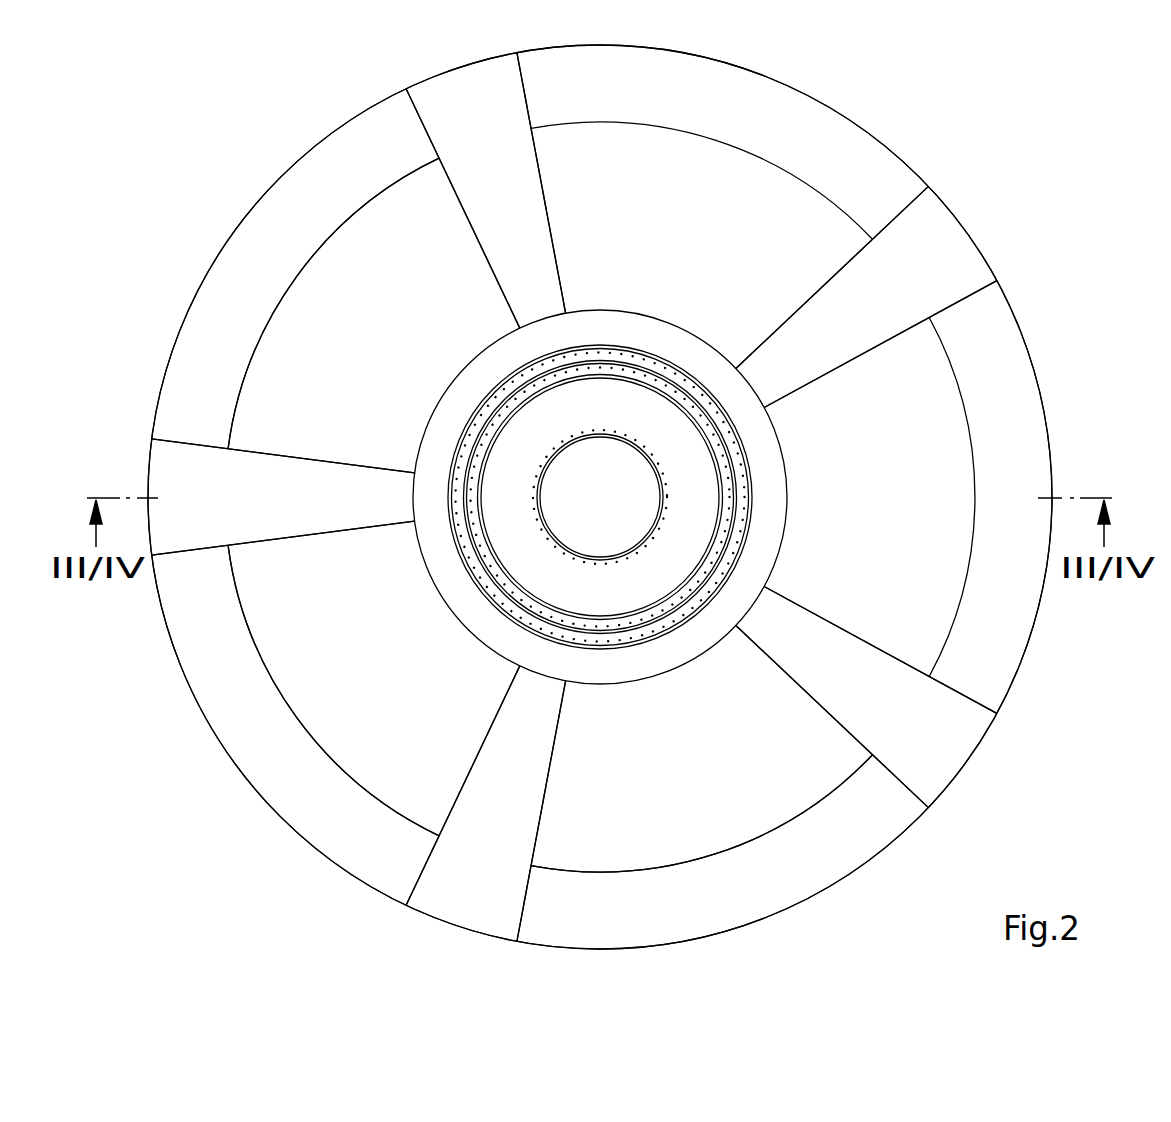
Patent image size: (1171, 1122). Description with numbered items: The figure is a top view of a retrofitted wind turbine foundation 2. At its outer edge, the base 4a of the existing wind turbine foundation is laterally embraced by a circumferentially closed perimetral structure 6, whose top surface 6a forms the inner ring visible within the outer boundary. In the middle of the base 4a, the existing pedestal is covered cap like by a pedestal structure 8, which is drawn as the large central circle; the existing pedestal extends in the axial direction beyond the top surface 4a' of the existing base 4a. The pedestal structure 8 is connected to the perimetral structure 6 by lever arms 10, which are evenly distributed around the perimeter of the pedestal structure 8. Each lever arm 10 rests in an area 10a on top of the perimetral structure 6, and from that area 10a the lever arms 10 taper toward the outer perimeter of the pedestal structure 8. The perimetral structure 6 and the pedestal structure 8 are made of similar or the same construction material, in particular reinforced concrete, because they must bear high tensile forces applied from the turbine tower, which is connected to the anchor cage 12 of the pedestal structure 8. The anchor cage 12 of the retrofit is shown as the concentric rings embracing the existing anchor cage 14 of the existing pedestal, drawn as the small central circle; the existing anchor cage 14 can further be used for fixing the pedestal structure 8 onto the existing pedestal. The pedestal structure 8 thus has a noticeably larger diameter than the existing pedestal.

The retrofitted wind turbine foundation 2 is at (1025, 153).
The base 4a is at (301, 497).
The top surface of existing base 4a' is at (702, 813).
The perimetral structure 6 is at (250, 243).
The top surface of perimetral structure 6a is at (238, 347).
The pedestal structure 8 is at (443, 575).
The lever arms 10 is at (530, 216).
The area 10a is at (506, 150).
The anchor cage 12 is at (672, 375).
The existing anchor cage 14 is at (553, 452).